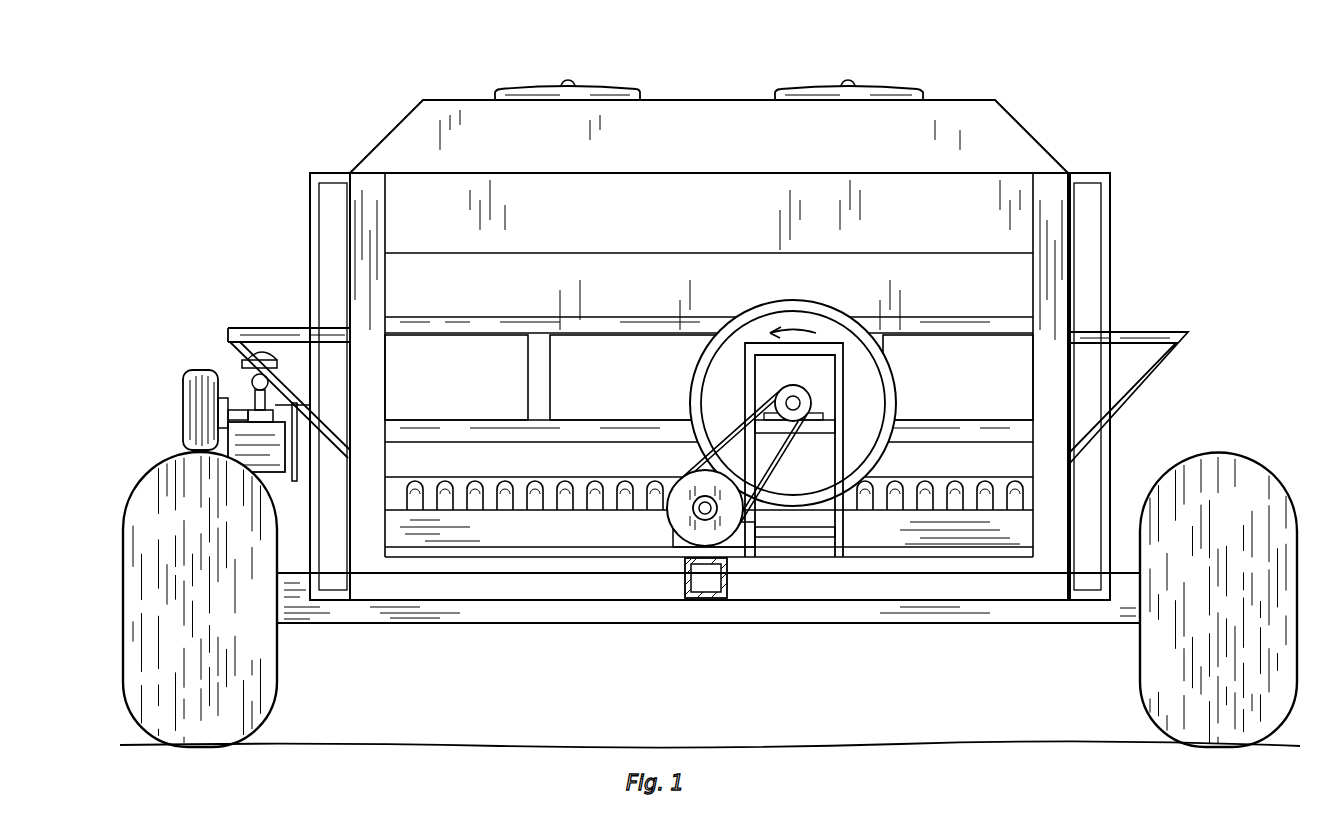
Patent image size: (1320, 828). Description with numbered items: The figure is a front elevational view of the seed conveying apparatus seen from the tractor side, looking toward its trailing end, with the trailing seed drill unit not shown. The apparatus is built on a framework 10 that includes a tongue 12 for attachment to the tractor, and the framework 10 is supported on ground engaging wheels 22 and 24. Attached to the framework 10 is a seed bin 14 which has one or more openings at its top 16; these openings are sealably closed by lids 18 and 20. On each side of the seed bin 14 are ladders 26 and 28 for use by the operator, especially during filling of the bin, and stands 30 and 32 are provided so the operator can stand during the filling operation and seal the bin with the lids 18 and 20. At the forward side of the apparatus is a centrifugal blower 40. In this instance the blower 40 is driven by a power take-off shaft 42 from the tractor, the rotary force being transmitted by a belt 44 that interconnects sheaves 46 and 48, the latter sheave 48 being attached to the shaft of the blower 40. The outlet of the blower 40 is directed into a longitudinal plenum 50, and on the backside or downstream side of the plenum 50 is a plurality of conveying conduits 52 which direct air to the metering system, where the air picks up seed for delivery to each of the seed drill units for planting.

The framework 10 is at (1045, 593).
The tongue 12 is at (717, 600).
The seed bin 14 is at (1032, 134).
The top 16 is at (708, 100).
The lid 18 is at (603, 86).
The lid 20 is at (900, 86).
The ground engaging wheel 22 is at (277, 695).
The ground engaging wheel 24 is at (1140, 700).
The ladder 26 is at (310, 230).
The ladder 28 is at (1110, 228).
The stand 30 is at (240, 328).
The stand 32 is at (1163, 332).
The blower 40 is at (818, 303).
The power take-off shaft 42 is at (717, 512).
The belt 44 is at (782, 450).
The sheave 46 is at (668, 513).
The sheave 48 is at (790, 397).
The longitudinal plenum 50 is at (562, 544).
The conveying conduits 52 is at (505, 487).